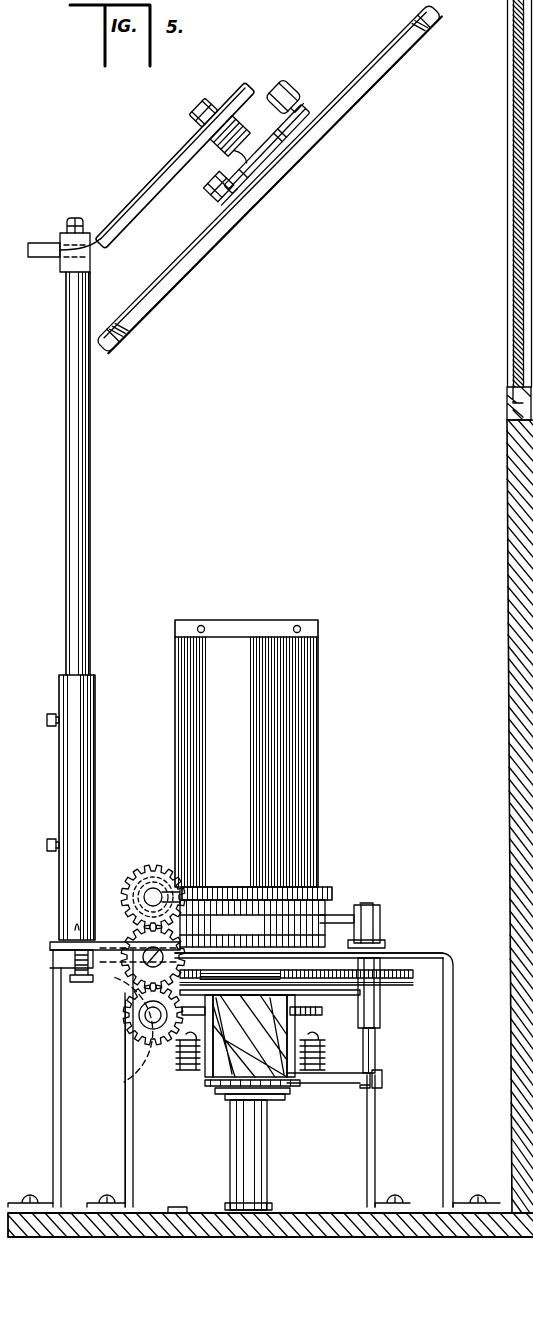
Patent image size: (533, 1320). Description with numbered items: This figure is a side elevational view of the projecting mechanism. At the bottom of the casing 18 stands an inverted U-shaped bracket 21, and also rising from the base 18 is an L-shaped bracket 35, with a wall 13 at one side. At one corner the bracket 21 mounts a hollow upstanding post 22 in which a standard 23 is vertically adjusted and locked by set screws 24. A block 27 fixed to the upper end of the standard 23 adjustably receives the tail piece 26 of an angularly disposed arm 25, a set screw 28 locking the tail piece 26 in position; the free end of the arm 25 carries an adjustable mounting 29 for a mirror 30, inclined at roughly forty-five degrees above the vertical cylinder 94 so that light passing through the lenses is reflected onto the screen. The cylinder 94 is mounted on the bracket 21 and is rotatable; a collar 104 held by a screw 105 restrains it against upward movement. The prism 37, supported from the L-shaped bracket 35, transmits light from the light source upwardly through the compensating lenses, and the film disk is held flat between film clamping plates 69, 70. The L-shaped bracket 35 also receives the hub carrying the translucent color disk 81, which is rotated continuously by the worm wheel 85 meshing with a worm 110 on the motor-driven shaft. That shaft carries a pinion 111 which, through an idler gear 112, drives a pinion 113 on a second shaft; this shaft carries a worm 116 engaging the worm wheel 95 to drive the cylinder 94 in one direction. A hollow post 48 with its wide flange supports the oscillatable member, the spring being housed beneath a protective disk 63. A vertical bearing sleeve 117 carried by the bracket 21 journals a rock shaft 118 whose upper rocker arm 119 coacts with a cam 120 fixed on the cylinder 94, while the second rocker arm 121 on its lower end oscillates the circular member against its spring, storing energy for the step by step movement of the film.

The wall 13 is at (507, 240).
The bottom of the casing 18 is at (425, 1210).
The inverted U-shaped bracket 21 is at (53, 1085).
The hollow upstanding post 22 is at (87, 790).
The standard 23 is at (90, 498).
The set screws 24 is at (47, 720).
The angularly disposed arm 25 is at (156, 182).
The tail piece 26 is at (38, 258).
The block 27 is at (90, 265).
The set screw 28 is at (72, 218).
The adjustable mounting 29 is at (210, 174).
The mirror 30 is at (355, 84).
The L-shaped bracket 35 is at (125, 1128).
The prism 37 is at (232, 1042).
The hollow post 48 is at (238, 1155).
The protective disk 63 is at (318, 1100).
The lower film clamping plate 69 is at (415, 972).
The upper film clamping plate 70 is at (406, 965).
The translucent color disk 81 is at (415, 988).
The worm wheel 85 is at (310, 1015).
The vertical cylinder 94 is at (318, 772).
The worm wheel 95 is at (332, 890).
The collar 104 is at (242, 622).
The screw 105 is at (300, 625).
The worm 110 is at (125, 1068).
The pinion 111 is at (140, 1031).
The idler gear 112 is at (136, 981).
The pinion 113 is at (150, 868).
The worm 116 is at (143, 887).
The vertical bearing sleeve 117 is at (380, 1012).
The rock shaft 118 is at (375, 1058).
The rocker arm 119 is at (341, 914).
The cam 120 is at (222, 905).
The second rocker arm 121 is at (340, 1086).